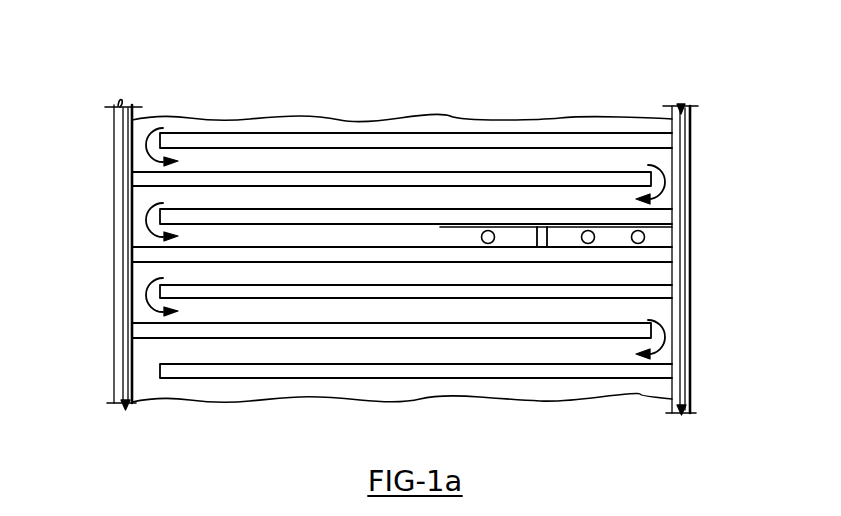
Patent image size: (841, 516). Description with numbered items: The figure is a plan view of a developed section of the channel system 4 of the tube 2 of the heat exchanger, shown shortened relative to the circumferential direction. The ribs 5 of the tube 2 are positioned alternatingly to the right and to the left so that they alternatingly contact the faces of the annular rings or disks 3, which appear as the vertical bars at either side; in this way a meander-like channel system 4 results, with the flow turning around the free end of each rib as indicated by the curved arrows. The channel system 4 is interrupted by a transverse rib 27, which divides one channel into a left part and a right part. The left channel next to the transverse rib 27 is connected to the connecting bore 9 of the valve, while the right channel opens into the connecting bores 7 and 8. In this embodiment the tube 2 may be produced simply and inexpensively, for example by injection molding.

The tube 2 is at (118, 455).
The annular rings or disks 3 is at (124, 145).
The channel system 4 is at (151, 125).
The ribs 5 is at (272, 180).
The connecting bore 7 is at (636, 231).
The connecting bore 8 is at (586, 231).
The connecting bore 9 is at (486, 231).
The transverse rib 27 is at (542, 238).